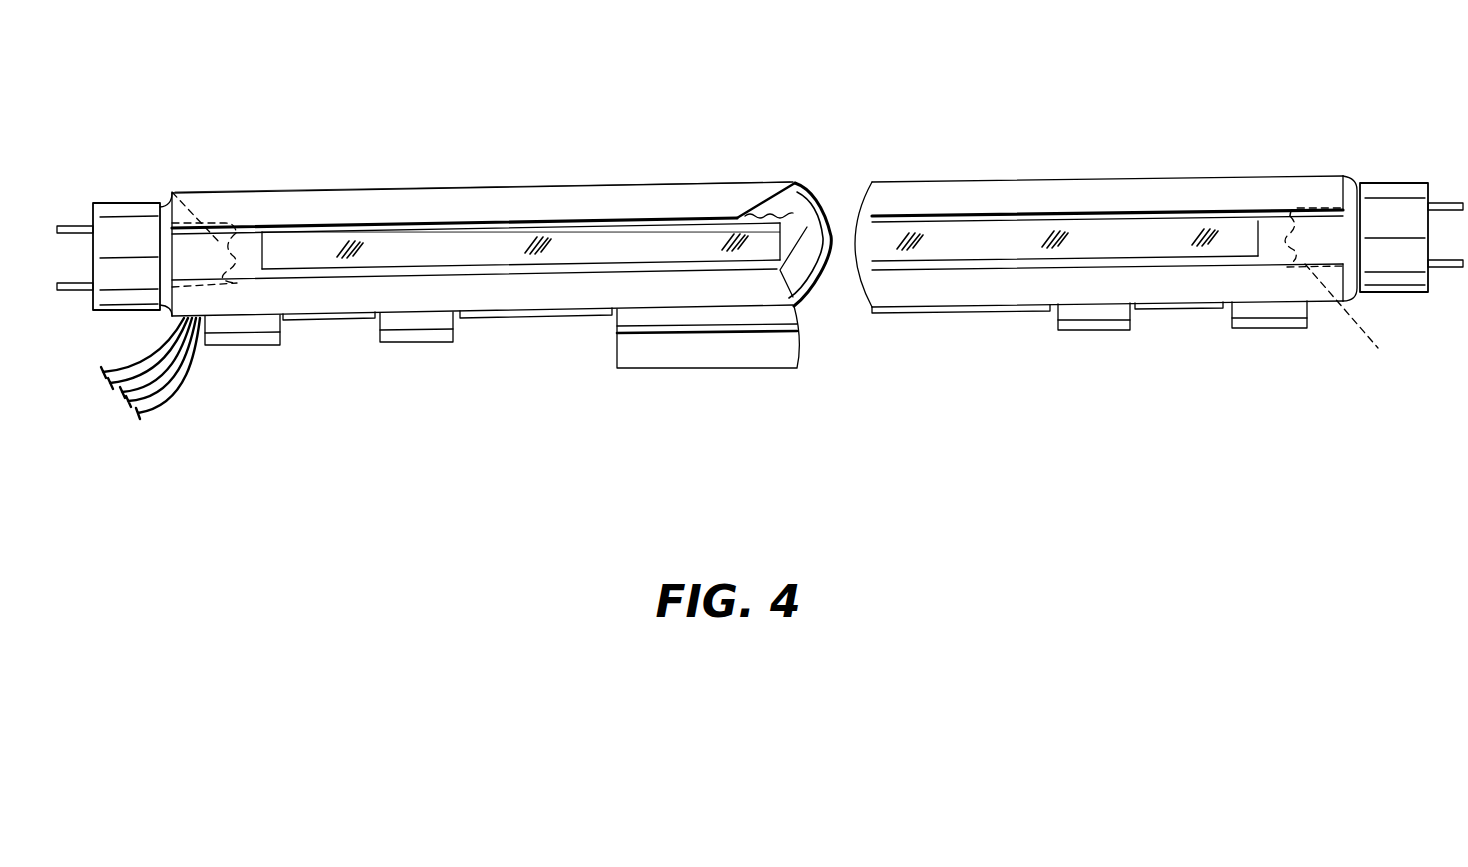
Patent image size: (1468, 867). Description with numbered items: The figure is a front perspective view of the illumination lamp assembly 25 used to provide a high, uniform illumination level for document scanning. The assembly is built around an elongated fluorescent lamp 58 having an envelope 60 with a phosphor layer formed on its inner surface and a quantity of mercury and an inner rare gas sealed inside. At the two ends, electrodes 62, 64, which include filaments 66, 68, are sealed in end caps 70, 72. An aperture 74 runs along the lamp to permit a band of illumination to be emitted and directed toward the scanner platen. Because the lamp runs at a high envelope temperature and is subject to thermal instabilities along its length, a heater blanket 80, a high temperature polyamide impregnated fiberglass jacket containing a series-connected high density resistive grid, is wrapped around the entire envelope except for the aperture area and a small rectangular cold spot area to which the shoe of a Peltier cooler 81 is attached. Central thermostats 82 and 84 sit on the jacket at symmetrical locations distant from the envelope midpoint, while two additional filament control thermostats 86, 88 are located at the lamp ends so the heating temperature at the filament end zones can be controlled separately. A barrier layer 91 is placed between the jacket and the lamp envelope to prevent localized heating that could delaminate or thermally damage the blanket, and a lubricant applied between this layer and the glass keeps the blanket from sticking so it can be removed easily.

The illumination lamp assembly 25 is at (718, 128).
The elongated fluorescent lamp 58 is at (1073, 160).
The envelope 60 is at (1340, 240).
The electrode 62 is at (91, 172).
The electrode 64 is at (1395, 158).
The filament 66 is at (172, 192).
The filament 68 is at (1358, 317).
The end cap 70 is at (117, 222).
The end cap 72 is at (1418, 285).
The aperture 74 is at (461, 245).
The heater blanket 80 is at (304, 205).
The Peltier cooler 81 is at (770, 345).
The central thermostat 82 is at (418, 333).
The central thermostat 84 is at (1075, 313).
The filament control thermostat 86 is at (243, 330).
The filament control thermostat 88 is at (1262, 313).
The barrier layer 91 is at (795, 184).